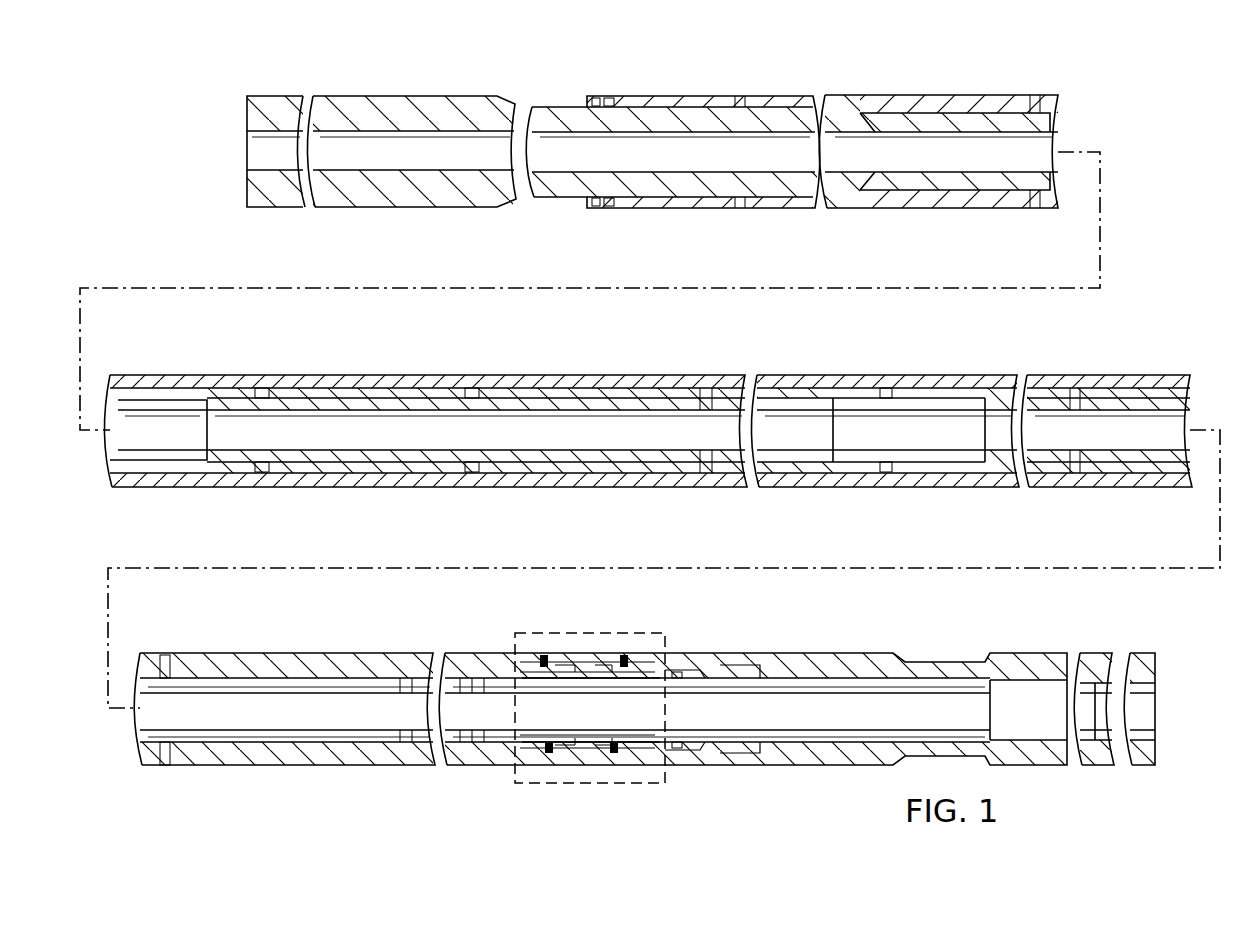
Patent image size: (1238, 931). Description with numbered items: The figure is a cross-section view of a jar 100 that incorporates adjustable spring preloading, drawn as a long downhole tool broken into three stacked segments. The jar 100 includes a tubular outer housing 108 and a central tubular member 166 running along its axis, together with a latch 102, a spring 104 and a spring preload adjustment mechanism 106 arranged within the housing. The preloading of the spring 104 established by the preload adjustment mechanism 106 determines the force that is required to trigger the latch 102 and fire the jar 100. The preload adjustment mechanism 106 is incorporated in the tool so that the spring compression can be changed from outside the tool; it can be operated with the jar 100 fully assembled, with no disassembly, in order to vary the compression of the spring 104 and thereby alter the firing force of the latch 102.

The jar 100 is at (152, 133).
The latch 102 is at (378, 665).
The spring 104 is at (470, 668).
The spring preload adjustment mechanism 106 is at (568, 785).
The tubular outer housing 108 is at (735, 758).
The central tubular member 166 is at (692, 681).